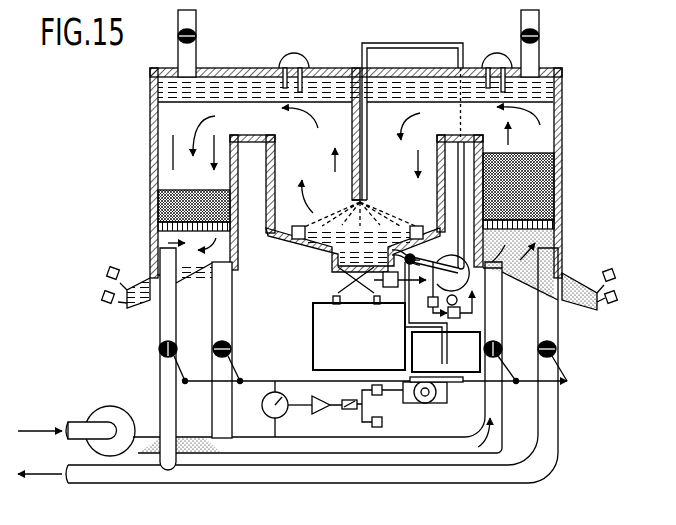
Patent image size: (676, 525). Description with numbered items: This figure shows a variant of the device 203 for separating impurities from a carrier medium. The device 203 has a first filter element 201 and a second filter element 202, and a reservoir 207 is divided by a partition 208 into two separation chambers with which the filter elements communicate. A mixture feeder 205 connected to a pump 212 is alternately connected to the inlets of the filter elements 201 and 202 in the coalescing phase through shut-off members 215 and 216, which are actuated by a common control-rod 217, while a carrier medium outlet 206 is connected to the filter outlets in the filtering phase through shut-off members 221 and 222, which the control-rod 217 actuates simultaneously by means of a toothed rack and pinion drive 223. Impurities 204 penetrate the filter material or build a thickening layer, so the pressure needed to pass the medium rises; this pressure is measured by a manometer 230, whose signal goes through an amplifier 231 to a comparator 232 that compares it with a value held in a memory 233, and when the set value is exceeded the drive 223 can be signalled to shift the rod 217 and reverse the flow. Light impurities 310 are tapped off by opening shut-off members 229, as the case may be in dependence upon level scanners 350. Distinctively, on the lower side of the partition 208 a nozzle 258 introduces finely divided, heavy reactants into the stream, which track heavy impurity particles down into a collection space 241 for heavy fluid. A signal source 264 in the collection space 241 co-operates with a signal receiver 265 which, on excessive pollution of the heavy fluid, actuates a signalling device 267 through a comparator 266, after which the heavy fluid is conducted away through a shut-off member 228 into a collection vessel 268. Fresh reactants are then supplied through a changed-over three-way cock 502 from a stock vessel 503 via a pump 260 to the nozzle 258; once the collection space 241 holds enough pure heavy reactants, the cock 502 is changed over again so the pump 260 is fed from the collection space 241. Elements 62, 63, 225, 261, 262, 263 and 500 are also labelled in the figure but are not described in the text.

The collecting chamber 62 is at (518, 278).
The outlet nozzle 63 is at (606, 300).
The first filter element 201 is at (149, 148).
The second filter element 202 is at (566, 163).
The device 203 is at (583, 104).
The impurities 204 is at (545, 133).
The mixture feeder 205 is at (70, 424).
The carrier medium outlet 206 is at (72, 462).
The reservoir 207 is at (268, 182).
The partition 208 is at (317, 160).
The pump 212 is at (102, 408).
The shut-off member 215 is at (233, 347).
The shut-off member 216 is at (516, 358).
The control-rod 217 is at (526, 381).
The shut-off member 221 is at (159, 350).
The shut-off member 222 is at (558, 352).
The toothed rack and pinion drive 223 is at (437, 405).
The filter 225 is at (158, 228).
The shut-off member 228 is at (340, 282).
The shut-off members 229 is at (197, 30).
The manometer 230 is at (281, 373).
The amplifier 231 is at (312, 405).
The comparator 232 is at (342, 404).
The memory 233 is at (383, 422).
The collection space 241 is at (330, 250).
The nozzle 258 is at (359, 200).
The pump 260 is at (460, 265).
The flow path 261 is at (182, 246).
The liquid 262 is at (193, 283).
The outlet nozzle 263 is at (125, 297).
The signal source 264 is at (294, 236).
The signal receiver 265 is at (417, 226).
The comparator 266 is at (405, 320).
The signalling device 267 is at (470, 314).
The collection vessel 268 is at (313, 326).
The light impurities 310 is at (153, 86).
The level scanners 350 is at (295, 58).
The liquid layer 500 is at (149, 97).
The three-way cock 502 is at (405, 300).
The stock vessel 503 is at (470, 373).